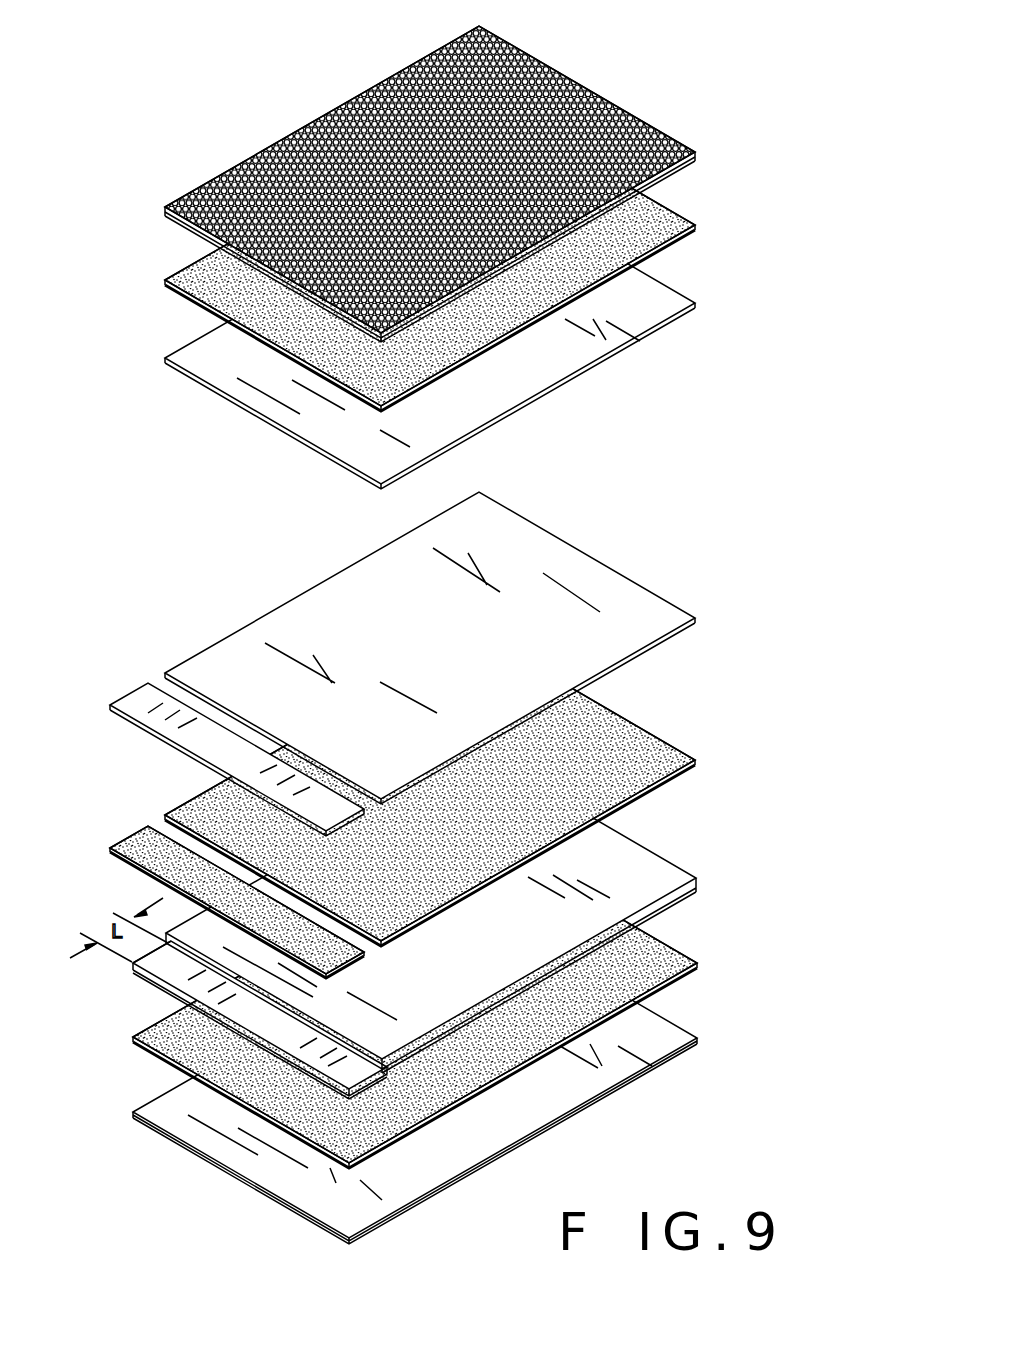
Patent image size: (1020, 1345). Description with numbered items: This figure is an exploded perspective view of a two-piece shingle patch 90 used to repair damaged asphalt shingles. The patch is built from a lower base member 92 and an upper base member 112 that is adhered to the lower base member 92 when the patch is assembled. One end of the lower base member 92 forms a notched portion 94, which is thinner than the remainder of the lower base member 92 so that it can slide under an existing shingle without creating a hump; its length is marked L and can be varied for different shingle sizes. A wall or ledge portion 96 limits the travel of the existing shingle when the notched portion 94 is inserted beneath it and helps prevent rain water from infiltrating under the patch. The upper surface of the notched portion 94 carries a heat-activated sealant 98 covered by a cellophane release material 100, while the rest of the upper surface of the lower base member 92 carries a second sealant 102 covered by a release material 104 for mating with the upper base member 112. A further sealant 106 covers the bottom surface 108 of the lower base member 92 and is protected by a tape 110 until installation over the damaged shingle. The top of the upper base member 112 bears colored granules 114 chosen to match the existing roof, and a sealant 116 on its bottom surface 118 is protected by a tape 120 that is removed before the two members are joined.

The shingle patch 90 is at (424, 624).
The lower base member 92 is at (424, 868).
The notched portion 94 is at (203, 975).
The ledge portion 96 is at (132, 965).
The sealant 98 is at (138, 848).
The release material 100 is at (143, 702).
The sealant 102 is at (648, 756).
The release material 104 is at (637, 610).
The sealant 106 is at (689, 958).
The bottom surface 108 is at (693, 900).
The tape 110 is at (668, 1043).
The upper base member 112 is at (477, 247).
The colored granules 114 is at (446, 44).
The sealant 116 is at (667, 222).
The bottom surface 118 is at (690, 169).
The tape 120 is at (634, 337).